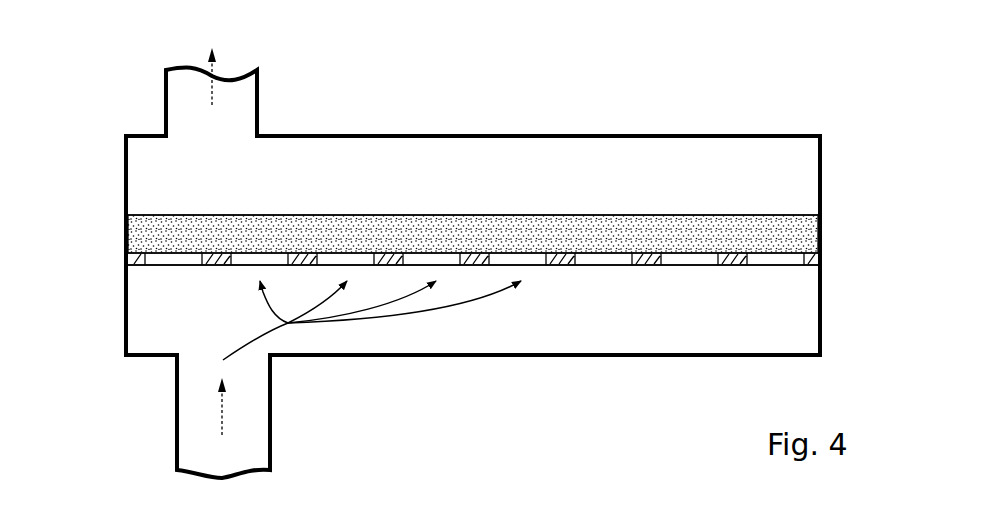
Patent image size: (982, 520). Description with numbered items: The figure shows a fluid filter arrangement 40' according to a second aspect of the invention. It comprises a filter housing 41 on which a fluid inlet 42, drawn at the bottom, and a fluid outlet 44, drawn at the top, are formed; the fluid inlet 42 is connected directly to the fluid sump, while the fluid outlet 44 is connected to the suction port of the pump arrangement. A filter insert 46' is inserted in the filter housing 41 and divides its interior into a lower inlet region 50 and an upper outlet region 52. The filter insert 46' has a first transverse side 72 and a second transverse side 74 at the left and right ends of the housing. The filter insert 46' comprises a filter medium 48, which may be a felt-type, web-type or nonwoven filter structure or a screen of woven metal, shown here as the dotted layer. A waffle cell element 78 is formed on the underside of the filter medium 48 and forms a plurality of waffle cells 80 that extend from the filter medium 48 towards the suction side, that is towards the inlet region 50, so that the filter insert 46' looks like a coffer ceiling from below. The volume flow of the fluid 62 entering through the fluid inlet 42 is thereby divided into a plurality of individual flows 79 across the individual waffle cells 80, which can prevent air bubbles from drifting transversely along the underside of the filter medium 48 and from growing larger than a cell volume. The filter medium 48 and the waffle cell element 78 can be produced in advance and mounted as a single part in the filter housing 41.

The fluid filter arrangement 40' is at (463, 263).
The filter housing 41 is at (715, 131).
The fluid inlet 42 is at (253, 397).
The fluid outlet 44 is at (242, 95).
The filter insert 46' is at (514, 245).
The filter medium 48 is at (655, 217).
The inlet region 50 is at (532, 326).
The outlet region 52 is at (585, 157).
The fluid 62 is at (222, 405).
The first transverse side 72 is at (127, 155).
The second transverse side 74 is at (823, 178).
The waffle cell element 78 is at (112, 253).
The individual flows 79 is at (465, 318).
The waffle cells 80 is at (175, 267).